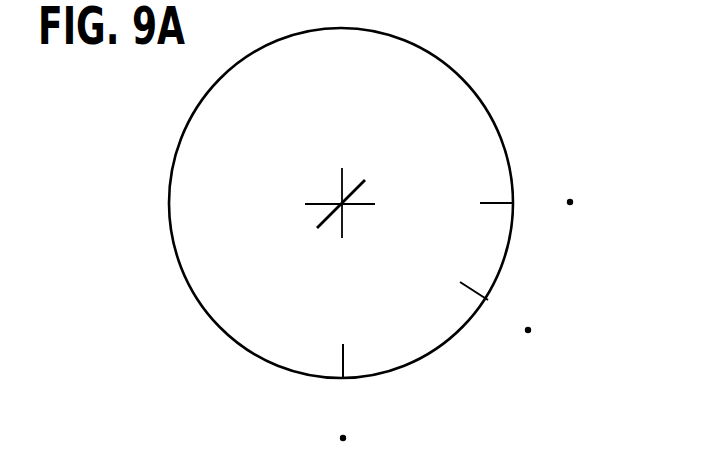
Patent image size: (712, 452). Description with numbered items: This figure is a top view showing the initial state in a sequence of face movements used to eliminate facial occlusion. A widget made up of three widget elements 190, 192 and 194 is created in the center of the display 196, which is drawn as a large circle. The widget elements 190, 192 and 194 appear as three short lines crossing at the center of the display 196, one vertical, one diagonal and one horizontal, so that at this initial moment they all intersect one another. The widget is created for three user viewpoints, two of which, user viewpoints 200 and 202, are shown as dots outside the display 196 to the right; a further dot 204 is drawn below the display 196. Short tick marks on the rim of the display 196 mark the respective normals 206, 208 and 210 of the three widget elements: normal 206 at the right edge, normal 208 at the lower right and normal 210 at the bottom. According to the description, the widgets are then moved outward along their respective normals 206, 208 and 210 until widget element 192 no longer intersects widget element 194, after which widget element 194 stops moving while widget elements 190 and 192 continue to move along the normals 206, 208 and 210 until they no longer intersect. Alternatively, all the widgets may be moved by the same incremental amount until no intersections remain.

The widget element 190 is at (340, 182).
The widget element 192 is at (365, 182).
The widget element 194 is at (364, 208).
The display 196 is at (460, 75).
The user viewpoint 200 is at (571, 201).
The user viewpoint 202 is at (530, 329).
The point marker 204 is at (345, 437).
The normal 206 is at (487, 199).
The normal 208 is at (465, 288).
The normal 210 is at (342, 357).